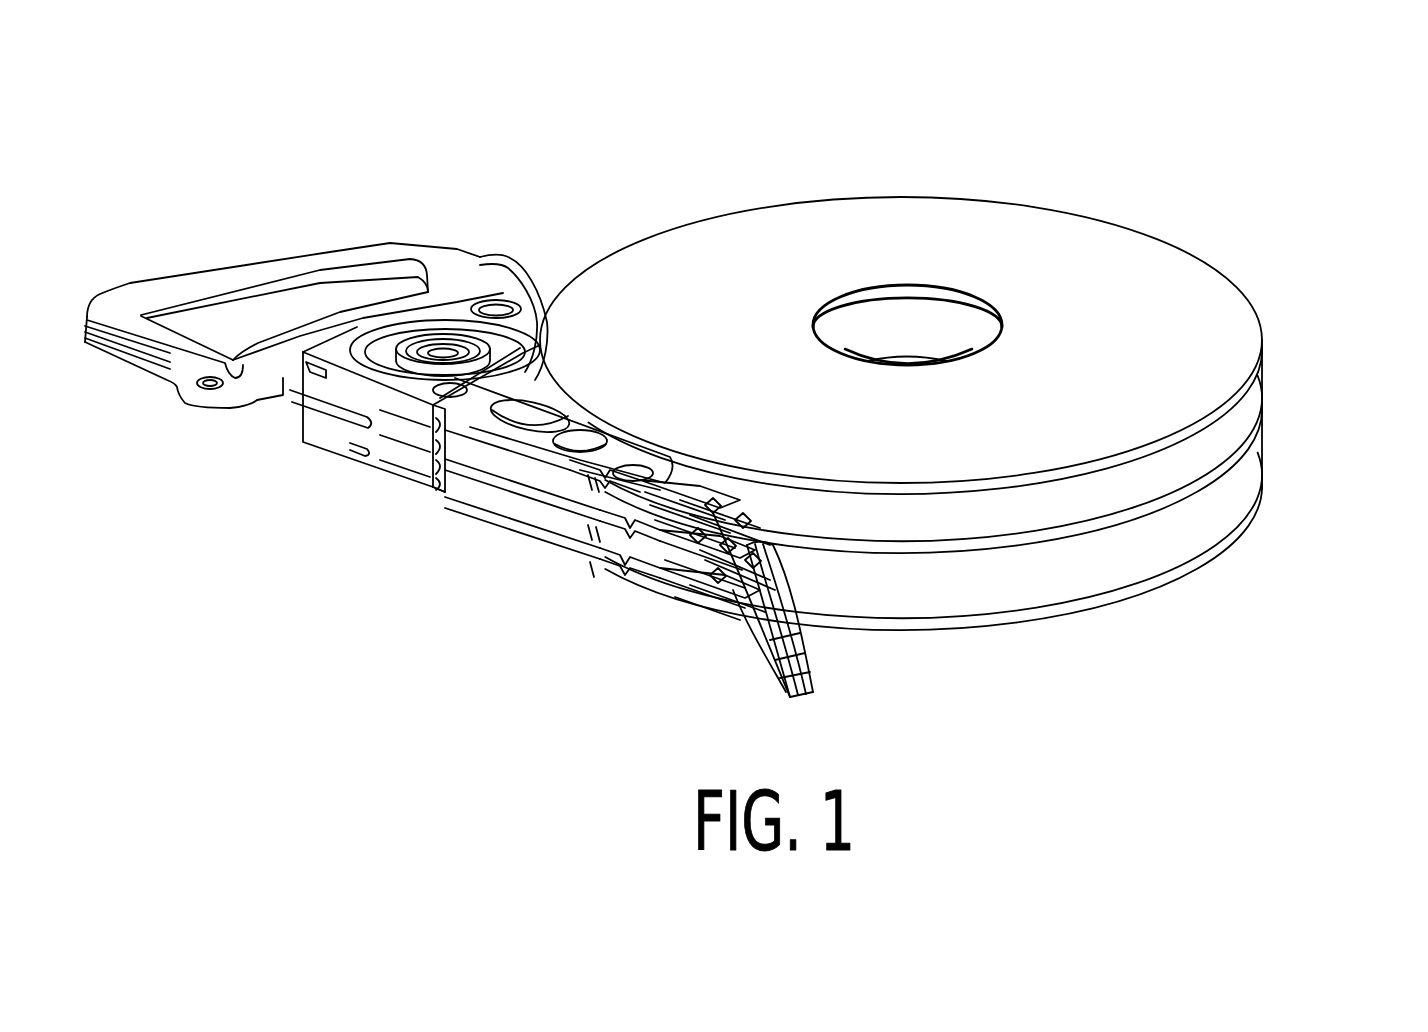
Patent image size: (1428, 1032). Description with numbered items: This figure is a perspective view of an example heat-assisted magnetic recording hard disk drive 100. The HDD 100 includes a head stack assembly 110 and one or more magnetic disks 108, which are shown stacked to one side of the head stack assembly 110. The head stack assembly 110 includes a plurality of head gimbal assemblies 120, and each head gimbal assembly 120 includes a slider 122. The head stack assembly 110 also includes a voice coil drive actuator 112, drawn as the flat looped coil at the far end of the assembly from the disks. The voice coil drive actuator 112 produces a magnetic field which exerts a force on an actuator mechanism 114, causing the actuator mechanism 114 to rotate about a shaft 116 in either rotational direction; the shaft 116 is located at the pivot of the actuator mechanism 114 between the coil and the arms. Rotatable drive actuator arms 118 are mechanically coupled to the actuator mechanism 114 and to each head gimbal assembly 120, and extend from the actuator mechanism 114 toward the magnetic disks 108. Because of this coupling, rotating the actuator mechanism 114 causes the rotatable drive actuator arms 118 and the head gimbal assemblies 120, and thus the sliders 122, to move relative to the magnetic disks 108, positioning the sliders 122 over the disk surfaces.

The hard disk drive 100 is at (1266, 144).
The magnetic disks 108 is at (1082, 203).
The head stack assembly 110 is at (580, 634).
The voice coil drive actuator 112 is at (240, 246).
The actuator mechanism 114 is at (534, 268).
The shaft 116 is at (447, 360).
The rotatable drive actuator arms 118 is at (477, 484).
The head gimbal assemblies 120 is at (734, 494).
The slider 122 is at (794, 610).